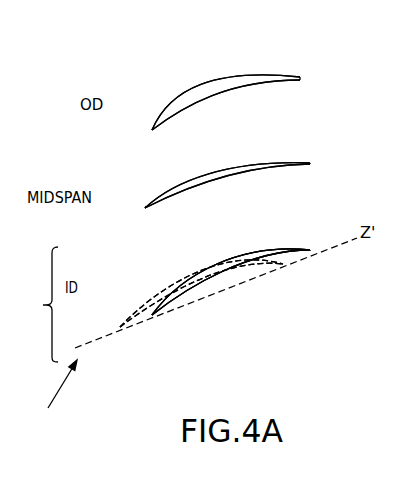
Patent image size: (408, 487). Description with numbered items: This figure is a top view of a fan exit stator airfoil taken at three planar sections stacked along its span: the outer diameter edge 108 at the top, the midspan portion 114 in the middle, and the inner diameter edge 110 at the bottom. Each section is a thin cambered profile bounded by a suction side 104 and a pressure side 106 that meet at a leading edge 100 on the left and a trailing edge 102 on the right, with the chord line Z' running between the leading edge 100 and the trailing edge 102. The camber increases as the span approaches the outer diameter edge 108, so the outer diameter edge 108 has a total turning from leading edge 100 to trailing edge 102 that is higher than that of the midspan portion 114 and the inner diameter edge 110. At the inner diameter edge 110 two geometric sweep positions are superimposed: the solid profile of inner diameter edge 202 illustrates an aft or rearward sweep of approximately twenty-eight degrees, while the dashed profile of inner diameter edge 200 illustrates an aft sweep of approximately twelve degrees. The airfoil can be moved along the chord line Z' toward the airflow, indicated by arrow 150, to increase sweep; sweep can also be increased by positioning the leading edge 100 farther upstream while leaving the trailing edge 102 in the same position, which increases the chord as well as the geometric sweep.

The leading edge 100 is at (152, 131).
The trailing edge 102 is at (300, 78).
The suction side 104 is at (215, 80).
The pressure side 106 is at (214, 96).
The outer diameter edge 108 is at (181, 80).
The midspan portion 114 is at (128, 172).
The inner diameter edge 110 is at (164, 304).
The arrow 150 is at (55, 396).
The inner diameter edge 200 is at (178, 268).
The inner diameter edge 202 is at (172, 307).